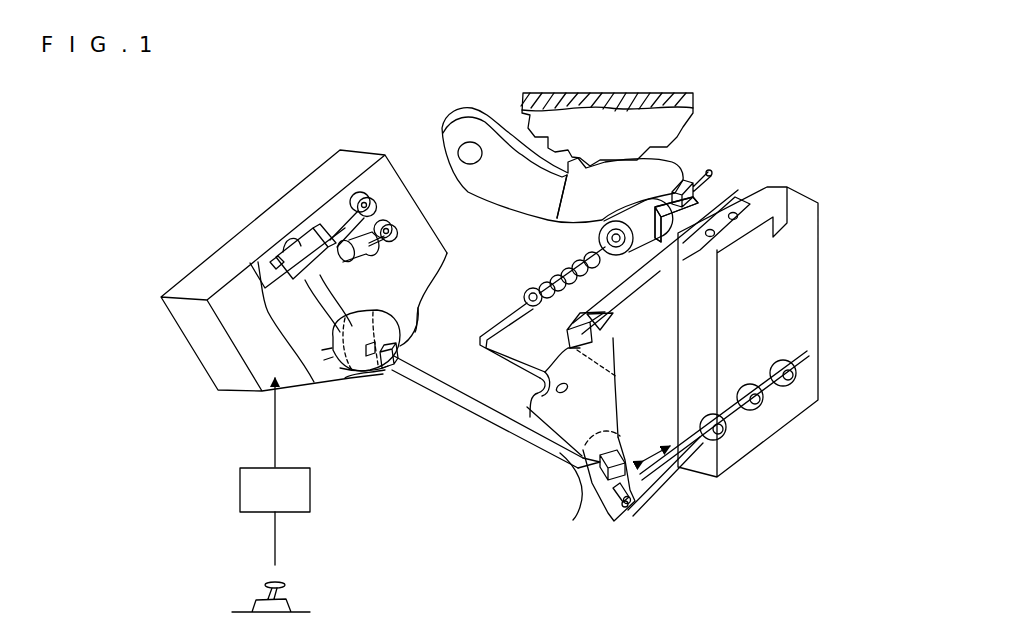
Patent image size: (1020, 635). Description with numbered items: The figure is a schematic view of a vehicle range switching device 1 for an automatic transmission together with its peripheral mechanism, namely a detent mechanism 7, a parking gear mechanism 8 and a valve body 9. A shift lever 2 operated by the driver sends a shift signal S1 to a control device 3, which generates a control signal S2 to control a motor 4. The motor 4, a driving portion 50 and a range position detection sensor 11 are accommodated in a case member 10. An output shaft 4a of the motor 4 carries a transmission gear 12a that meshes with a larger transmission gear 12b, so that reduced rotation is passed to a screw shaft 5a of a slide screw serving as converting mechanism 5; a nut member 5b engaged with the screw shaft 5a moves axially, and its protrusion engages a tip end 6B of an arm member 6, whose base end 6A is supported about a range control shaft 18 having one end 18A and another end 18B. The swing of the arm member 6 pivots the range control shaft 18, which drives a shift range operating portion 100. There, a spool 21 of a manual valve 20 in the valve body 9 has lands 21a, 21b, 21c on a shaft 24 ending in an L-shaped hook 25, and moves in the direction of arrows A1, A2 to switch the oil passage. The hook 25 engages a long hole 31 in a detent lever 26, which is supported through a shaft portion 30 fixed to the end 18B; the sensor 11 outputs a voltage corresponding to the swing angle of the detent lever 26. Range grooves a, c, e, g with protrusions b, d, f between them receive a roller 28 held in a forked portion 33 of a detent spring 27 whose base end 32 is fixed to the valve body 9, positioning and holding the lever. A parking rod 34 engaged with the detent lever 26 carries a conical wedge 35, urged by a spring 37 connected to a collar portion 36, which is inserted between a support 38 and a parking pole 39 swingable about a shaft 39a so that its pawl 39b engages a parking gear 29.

The range switching device 1 is at (342, 116).
The shift lever 2 is at (297, 593).
The control device 3 is at (313, 487).
The motor 4 is at (359, 267).
The output shaft 4a is at (378, 240).
The converting mechanism 5 is at (260, 252).
The screw shaft 5a is at (342, 196).
The nut member 5b is at (278, 255).
The arm member 6 is at (330, 272).
The base end 6A is at (400, 338).
The tip end 6B is at (294, 236).
The detent mechanism 7 is at (543, 423).
The parking gear mechanism 8 is at (526, 221).
The valve body 9 is at (820, 303).
The case member 10 is at (212, 358).
The range position detection sensor 11 is at (345, 380).
The transmission gear 12a is at (405, 222).
The transmission gear 12b is at (370, 190).
The range control shaft 18 is at (480, 403).
The end of range control shaft 18A is at (390, 378).
The other end of range control shaft 18B is at (597, 493).
The manual valve 20 is at (762, 373).
The spool 21 is at (734, 446).
The land 21a is at (707, 417).
The land 21b is at (763, 400).
The land 21c is at (797, 368).
The shaft 24 is at (660, 473).
The hook 25 is at (626, 514).
The detent lever 26 is at (562, 433).
The detent spring 27 is at (660, 280).
The roller 28 is at (570, 333).
The parking gear 29 is at (700, 137).
The shaft portion 30 is at (588, 465).
The long hole 31 is at (613, 510).
The base end 32 is at (723, 220).
The forked portion 33 is at (600, 347).
The parking rod 34 is at (500, 327).
The conical wedge 35 is at (590, 243).
The collar portion 36 is at (523, 297).
The spring 37 is at (563, 267).
The support 38 is at (700, 205).
The parking pole 39 is at (693, 167).
The shaft 39a is at (470, 163).
The pawl 39b is at (545, 211).
The driving portion 50 is at (243, 243).
The shift range operating portion 100 is at (668, 530).
The shift signal S1 is at (278, 540).
The control signal S2 is at (276, 430).
The arrow A1 is at (661, 440).
The arrow A2 is at (640, 472).
The range groove a is at (533, 403).
The protrusion b is at (540, 373).
The range groove c is at (557, 381).
The protrusion d is at (495, 357).
The range groove e is at (574, 360).
The protrusion f is at (573, 345).
The range groove g is at (623, 387).